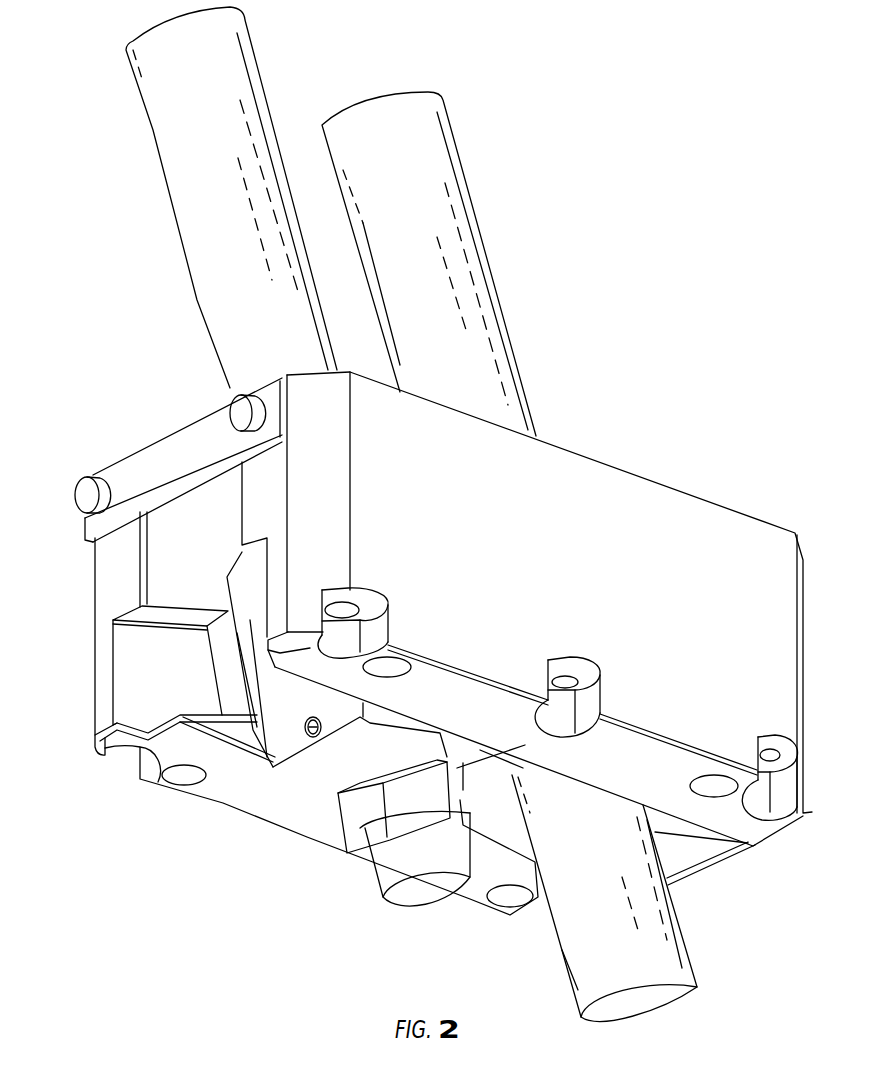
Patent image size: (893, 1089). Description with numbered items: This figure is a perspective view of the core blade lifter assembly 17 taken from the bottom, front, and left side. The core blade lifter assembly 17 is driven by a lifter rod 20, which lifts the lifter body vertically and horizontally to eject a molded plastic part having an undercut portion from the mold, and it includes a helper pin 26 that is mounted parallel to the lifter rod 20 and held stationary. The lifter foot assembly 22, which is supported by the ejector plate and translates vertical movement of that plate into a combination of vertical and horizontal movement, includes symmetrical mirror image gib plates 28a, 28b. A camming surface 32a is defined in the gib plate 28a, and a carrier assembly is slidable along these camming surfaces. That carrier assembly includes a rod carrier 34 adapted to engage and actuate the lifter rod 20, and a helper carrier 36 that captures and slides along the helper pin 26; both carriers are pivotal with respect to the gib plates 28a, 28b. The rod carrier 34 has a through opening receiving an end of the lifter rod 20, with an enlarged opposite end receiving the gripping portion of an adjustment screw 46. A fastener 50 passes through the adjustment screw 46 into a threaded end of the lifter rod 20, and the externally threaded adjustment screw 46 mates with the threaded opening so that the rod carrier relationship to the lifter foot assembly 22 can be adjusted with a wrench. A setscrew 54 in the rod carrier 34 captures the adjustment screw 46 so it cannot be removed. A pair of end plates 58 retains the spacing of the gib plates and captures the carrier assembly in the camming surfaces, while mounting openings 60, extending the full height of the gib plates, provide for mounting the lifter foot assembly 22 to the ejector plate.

The core blade lifter assembly 17 is at (608, 163).
The lifter rod 20 is at (193, 277).
The lifter foot assembly 22 is at (421, 661).
The helper pin 26 is at (497, 290).
The gib plate 28a is at (95, 631).
The gib plate 28b is at (642, 478).
The camming surface 32a is at (183, 681).
The rod carrier 34 is at (227, 577).
The helper carrier 36 is at (483, 792).
The adjustment screw 46 is at (348, 825).
The fastener 50 is at (412, 908).
The setscrew 54 is at (305, 735).
The end plate 58 is at (167, 438).
The mounting opening 60 is at (350, 608).